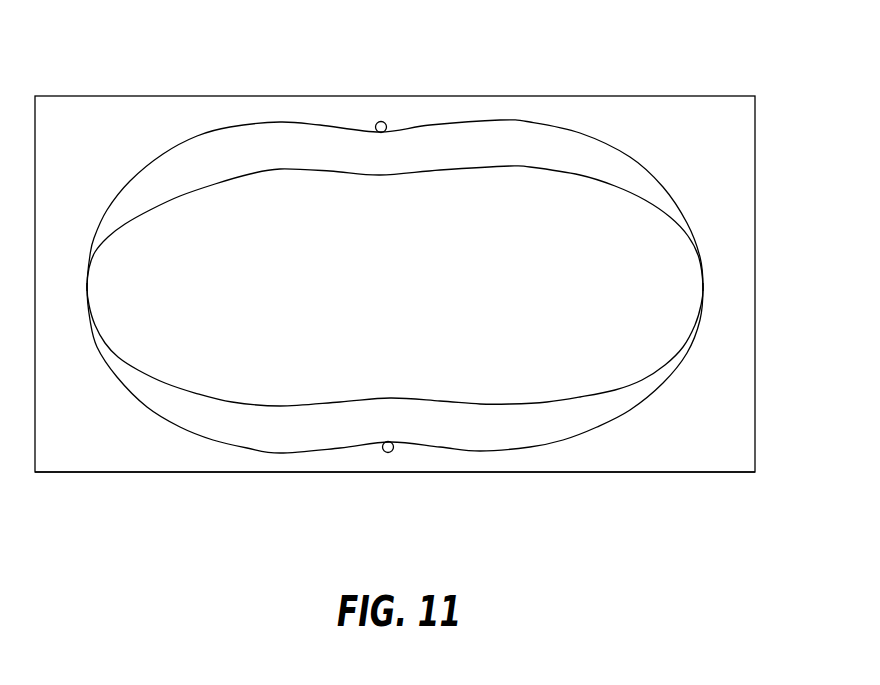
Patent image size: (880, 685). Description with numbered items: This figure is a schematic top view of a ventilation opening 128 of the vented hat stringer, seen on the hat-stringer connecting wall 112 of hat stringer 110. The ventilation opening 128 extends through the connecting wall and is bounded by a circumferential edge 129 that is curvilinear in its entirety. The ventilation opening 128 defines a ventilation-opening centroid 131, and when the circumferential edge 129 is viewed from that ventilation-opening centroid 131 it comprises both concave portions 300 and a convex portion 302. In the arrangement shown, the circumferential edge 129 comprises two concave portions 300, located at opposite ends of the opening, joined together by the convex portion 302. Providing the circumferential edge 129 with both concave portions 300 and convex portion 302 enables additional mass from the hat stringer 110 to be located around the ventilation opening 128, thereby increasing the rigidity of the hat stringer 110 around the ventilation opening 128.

The hat stringer 110 is at (698, 480).
The hat-stringer connecting wall 112 is at (117, 455).
The ventilation opening 128 is at (626, 197).
The circumferential edge 129 is at (255, 140).
The ventilation-opening centroid 131 is at (446, 303).
The concave portions 300 is at (89, 288).
The convex portion 302 is at (376, 134).